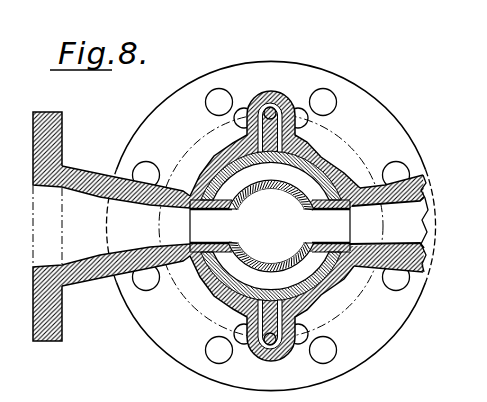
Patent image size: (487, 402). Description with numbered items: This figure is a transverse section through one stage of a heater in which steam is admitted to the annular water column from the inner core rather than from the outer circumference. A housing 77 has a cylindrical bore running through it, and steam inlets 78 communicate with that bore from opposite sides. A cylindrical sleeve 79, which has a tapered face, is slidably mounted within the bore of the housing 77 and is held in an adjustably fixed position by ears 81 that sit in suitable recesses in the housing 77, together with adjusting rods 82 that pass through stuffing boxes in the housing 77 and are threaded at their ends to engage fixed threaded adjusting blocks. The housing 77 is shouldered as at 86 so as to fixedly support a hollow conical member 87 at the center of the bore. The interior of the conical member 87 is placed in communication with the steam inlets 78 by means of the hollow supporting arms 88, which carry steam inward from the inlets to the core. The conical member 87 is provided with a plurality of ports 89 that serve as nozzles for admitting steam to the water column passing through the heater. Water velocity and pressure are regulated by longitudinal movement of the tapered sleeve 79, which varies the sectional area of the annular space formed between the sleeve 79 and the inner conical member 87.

The housing 77 is at (340, 178).
The steam inlets 78 is at (67, 209).
The cylindrical sleeve 79 is at (332, 280).
The ears 81 is at (258, 126).
The adjusting rods 82 is at (274, 105).
The shoulder 86 is at (203, 191).
The hollow conical member 87 is at (263, 259).
The hollow supporting arms 88 is at (214, 207).
The ports 89 is at (277, 183).